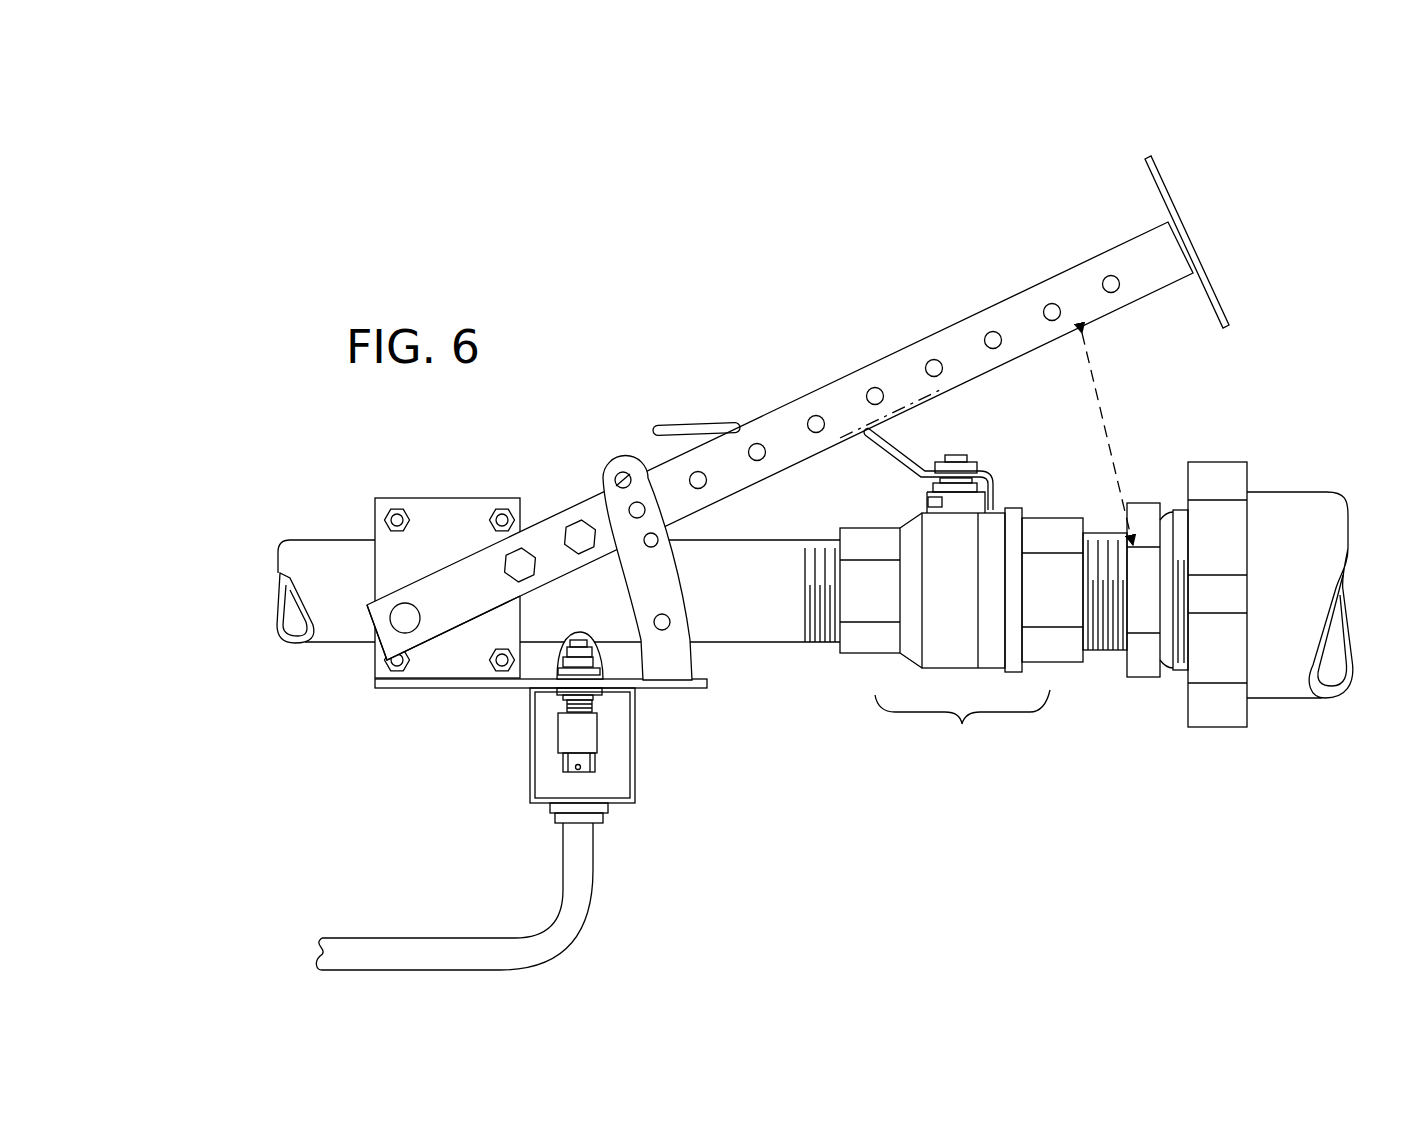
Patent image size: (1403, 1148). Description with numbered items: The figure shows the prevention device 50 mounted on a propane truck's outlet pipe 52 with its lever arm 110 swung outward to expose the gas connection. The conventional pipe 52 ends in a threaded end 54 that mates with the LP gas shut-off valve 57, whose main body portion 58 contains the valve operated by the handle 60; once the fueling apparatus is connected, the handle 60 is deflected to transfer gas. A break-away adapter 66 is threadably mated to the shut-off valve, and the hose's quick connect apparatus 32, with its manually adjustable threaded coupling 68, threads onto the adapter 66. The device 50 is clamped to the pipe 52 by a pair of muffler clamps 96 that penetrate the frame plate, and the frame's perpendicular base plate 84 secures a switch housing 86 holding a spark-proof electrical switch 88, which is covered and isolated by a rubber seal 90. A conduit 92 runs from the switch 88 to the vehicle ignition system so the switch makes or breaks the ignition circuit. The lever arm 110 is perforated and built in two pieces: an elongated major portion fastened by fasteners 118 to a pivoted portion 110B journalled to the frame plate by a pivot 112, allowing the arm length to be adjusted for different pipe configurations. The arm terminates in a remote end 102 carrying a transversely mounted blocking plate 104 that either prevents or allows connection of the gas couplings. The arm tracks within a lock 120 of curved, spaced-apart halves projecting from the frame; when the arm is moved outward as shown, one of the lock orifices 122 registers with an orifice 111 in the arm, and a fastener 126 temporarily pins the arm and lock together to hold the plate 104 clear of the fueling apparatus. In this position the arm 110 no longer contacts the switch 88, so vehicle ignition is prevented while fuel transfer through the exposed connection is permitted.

The quick connect apparatus 32 is at (452, 530).
The prevention device 50 is at (726, 451).
The outlet pipe 52 is at (737, 563).
The threaded end 54 is at (820, 552).
The LP gas shut-off valve 57 is at (995, 594).
The main body portion 58 is at (1000, 537).
The handle 60 is at (716, 424).
The break-away adapter 66 is at (1148, 476).
The threaded coupling 68 is at (1225, 735).
The base plate 84 is at (447, 690).
The switch housing 86 is at (636, 772).
The electrical switch 88 is at (578, 668).
The rubber seal 90 is at (557, 665).
The conduit 92 is at (593, 912).
The muffler clamps 96 is at (382, 522).
The remote end 102 is at (1106, 200).
The blocking plate 104 is at (1158, 160).
The lever arm 110 is at (726, 451).
The pivoted portion 110B is at (470, 593).
The orifice 111 is at (1052, 321).
The pivot 112 is at (398, 622).
The fasteners 118 is at (535, 565).
The lock 120 is at (620, 462).
The lock orifices 122 is at (660, 546).
The fastener 126 is at (665, 541).